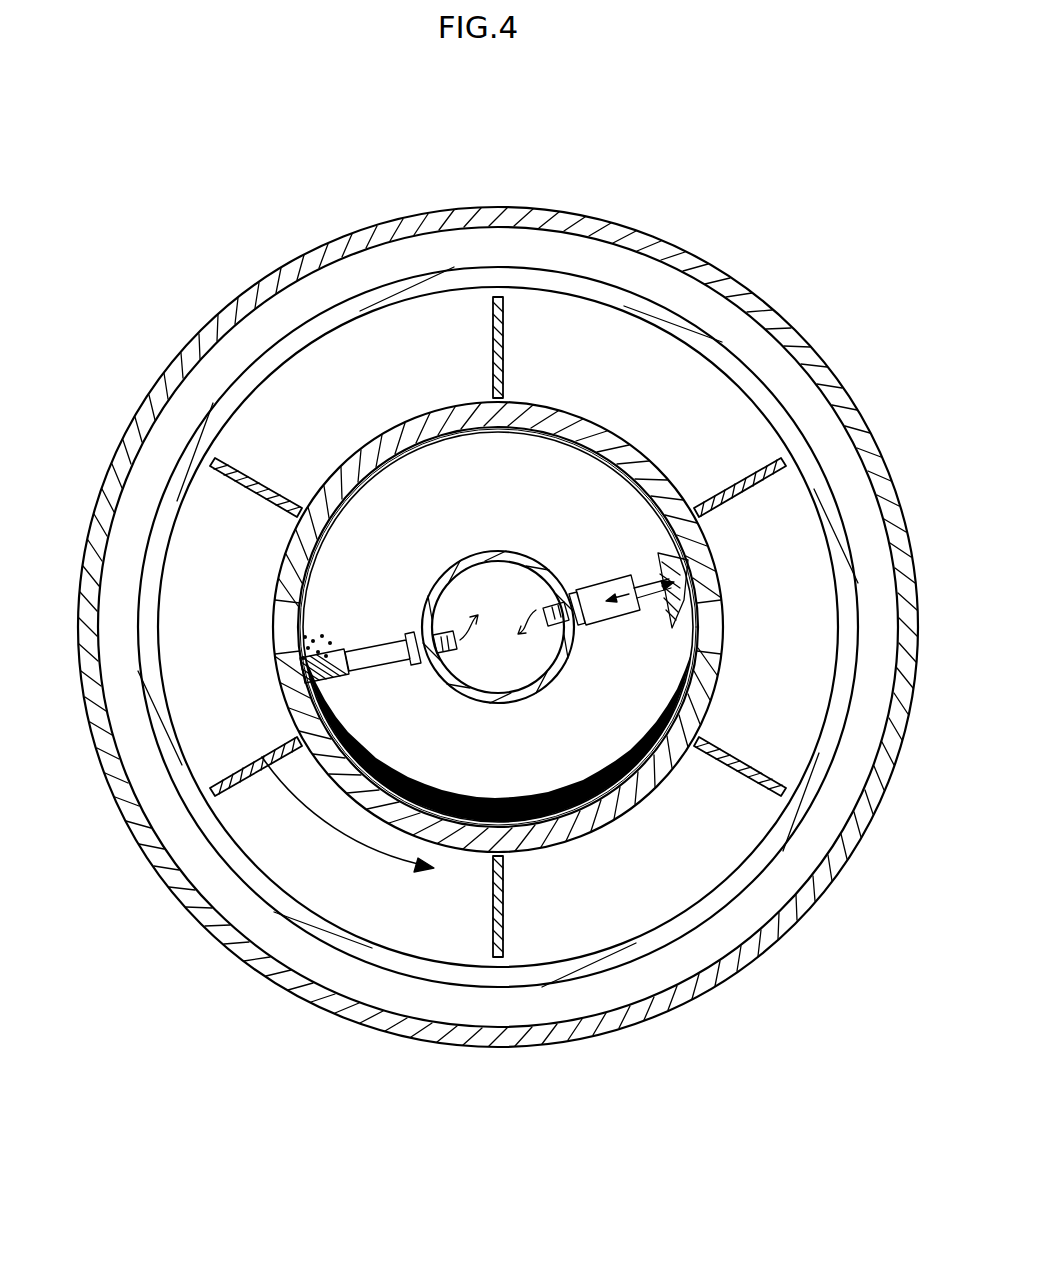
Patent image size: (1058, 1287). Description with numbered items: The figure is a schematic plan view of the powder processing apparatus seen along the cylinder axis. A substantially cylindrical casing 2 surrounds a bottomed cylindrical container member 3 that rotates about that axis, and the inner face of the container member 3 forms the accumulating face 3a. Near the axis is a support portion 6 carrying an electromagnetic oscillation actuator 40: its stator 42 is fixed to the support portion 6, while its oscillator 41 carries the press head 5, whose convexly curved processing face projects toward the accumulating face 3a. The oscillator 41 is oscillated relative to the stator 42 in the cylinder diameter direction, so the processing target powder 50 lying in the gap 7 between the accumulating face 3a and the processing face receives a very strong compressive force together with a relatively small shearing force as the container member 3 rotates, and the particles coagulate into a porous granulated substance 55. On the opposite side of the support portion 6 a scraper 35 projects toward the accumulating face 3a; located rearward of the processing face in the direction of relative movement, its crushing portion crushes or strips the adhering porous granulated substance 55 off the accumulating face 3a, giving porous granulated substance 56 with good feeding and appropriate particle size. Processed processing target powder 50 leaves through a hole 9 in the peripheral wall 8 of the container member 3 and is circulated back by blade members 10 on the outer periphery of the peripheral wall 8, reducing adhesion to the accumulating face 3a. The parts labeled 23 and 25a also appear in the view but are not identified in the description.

The casing 2 is at (736, 286).
The container member 3 is at (648, 458).
The accumulating face 3a is at (524, 432).
The press head 5 is at (690, 576).
The support portion 6 is at (444, 576).
The gap 7 is at (662, 556).
The peripheral wall 8 is at (627, 803).
The hole 9 is at (282, 628).
The blade member 10 is at (497, 332).
The support 23 is at (957, 860).
The nozzle holder 25a is at (290, 661).
The scraper 35 is at (383, 670).
The electromagnetic oscillation actuator 40 is at (604, 586).
The oscillator 41 is at (652, 608).
The stator 42 is at (597, 619).
The processing target powder 50 is at (502, 812).
The porous granulated substance 55 is at (417, 444).
The porous granulated substance 56 is at (300, 640).